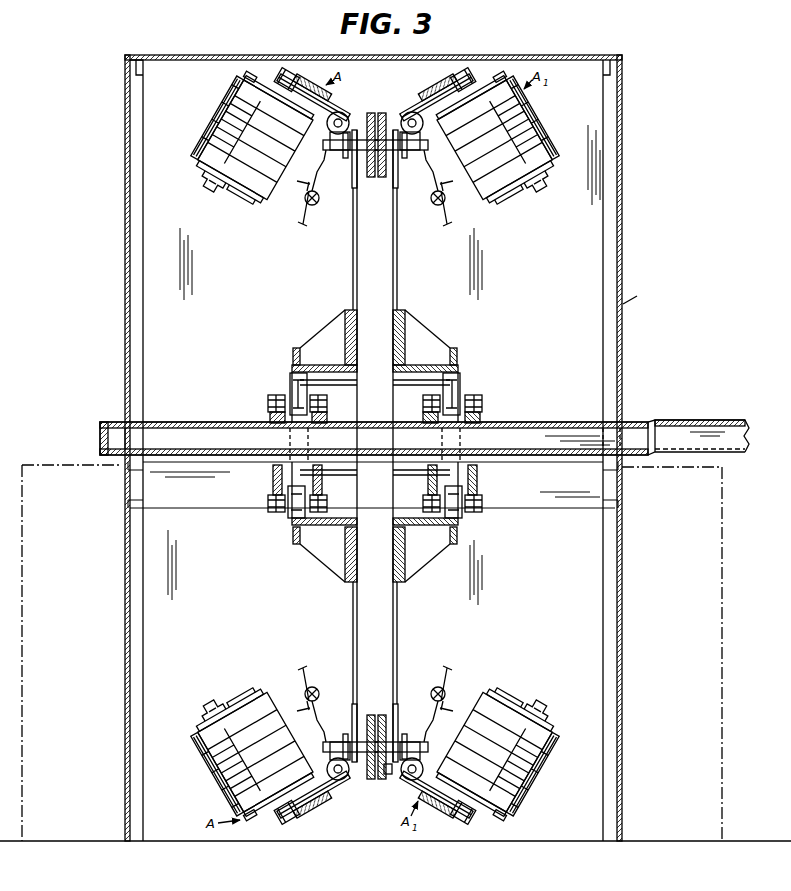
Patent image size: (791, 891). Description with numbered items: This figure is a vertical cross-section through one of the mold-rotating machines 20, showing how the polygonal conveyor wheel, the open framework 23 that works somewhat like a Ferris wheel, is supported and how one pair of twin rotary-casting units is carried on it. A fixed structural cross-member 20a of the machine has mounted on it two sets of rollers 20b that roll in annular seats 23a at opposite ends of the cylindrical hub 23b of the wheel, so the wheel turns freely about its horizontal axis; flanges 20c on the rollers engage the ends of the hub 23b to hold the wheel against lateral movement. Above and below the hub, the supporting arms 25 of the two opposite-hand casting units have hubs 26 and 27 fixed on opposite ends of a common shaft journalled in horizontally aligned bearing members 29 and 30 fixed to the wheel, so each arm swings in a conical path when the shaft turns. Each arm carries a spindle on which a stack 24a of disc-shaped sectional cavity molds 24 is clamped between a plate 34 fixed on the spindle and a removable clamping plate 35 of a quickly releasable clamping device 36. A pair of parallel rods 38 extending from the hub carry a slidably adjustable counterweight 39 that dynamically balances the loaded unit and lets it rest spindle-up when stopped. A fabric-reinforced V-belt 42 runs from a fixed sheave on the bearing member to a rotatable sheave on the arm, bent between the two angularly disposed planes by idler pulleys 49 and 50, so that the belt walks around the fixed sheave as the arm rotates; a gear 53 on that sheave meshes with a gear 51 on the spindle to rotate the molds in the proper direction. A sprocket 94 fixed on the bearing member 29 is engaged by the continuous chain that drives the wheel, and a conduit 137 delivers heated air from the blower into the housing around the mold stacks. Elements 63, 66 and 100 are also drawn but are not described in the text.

The mold-rotating machine 20 is at (623, 229).
The fixed structural cross-member 20a is at (545, 422).
The rollers 20b is at (288, 390).
The flanges 20c is at (482, 405).
The open framework 23 is at (399, 243).
The annular seats 23a is at (300, 380).
The cylindrical hub 23b is at (432, 365).
The sectional cavity molds 24 is at (208, 146).
The stack of molds 24a is at (212, 129).
The supporting arm 25 is at (466, 86).
The hub 26 is at (331, 148).
The hub 27 is at (427, 150).
The bearing member 29 is at (346, 160).
The bearing member 30 is at (389, 134).
The plate 34 is at (500, 82).
The removable clamping plate 35 is at (253, 200).
The quickly releasable clamping device 36 is at (227, 209).
The parallel rods 38 is at (450, 217).
The counterweight 39 is at (431, 203).
The V-belt 42 is at (404, 160).
The idler pulley 49 is at (347, 117).
The idler pulley 50 is at (343, 781).
The gear 51 is at (284, 80).
The gear 53 is at (430, 92).
The fastener 63 is at (387, 771).
The sprocket 66 is at (378, 113).
The sprocket 94 is at (358, 182).
The shaft portion 100 is at (355, 250).
The conduit 137 is at (672, 422).